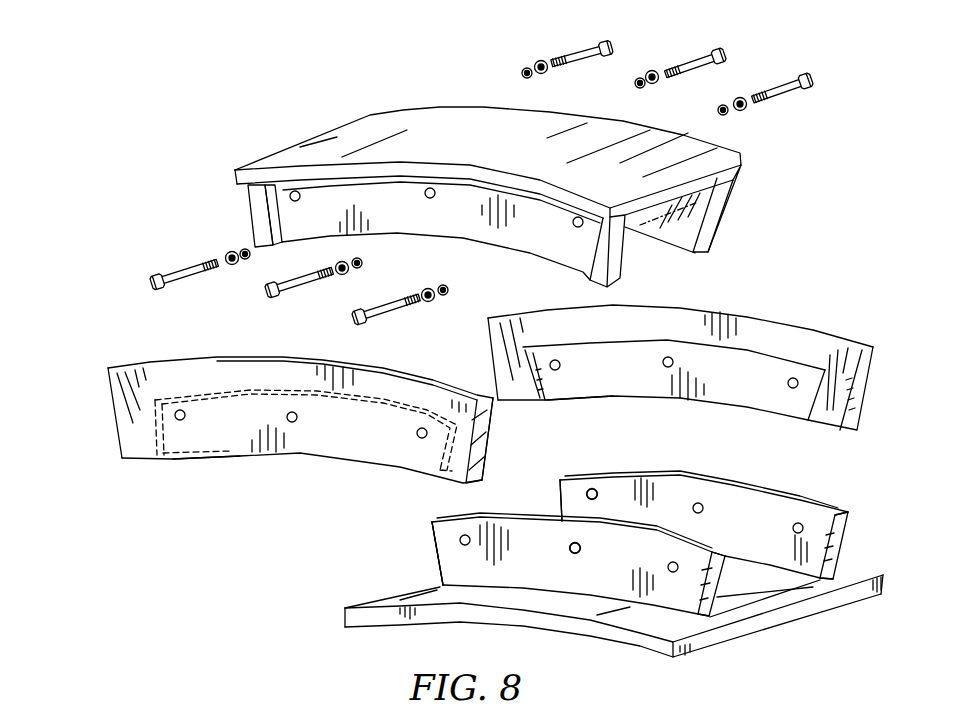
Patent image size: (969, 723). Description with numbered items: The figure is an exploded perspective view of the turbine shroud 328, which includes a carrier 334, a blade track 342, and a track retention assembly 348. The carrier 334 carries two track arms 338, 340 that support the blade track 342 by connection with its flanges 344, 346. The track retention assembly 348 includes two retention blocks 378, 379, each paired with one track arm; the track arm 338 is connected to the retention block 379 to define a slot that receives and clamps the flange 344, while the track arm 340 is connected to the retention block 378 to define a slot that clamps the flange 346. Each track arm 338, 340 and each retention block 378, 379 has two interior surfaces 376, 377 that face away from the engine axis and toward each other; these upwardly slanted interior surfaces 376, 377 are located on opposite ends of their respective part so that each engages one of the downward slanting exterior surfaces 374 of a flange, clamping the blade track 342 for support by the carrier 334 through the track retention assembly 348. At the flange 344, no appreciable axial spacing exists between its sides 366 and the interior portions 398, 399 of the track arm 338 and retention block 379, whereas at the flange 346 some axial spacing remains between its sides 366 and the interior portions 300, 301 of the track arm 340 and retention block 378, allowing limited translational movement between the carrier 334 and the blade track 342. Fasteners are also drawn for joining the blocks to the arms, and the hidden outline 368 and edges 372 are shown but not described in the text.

The turbine shroud 328 is at (222, 89).
The carrier 334 is at (597, 117).
The track arm 338 is at (726, 190).
The interior portion 398 is at (730, 226).
The track arm 340 is at (252, 199).
The interior portion 301 is at (412, 207).
The track retention assembly 348 is at (112, 248).
The retention block 378 is at (297, 373).
The retention block 379 is at (748, 328).
The interior surface 376 is at (175, 427).
The interior surface 377 is at (427, 455).
The interior portion 300 is at (319, 437).
The mounting plate 368 is at (477, 503).
The interior portion 399 is at (613, 387).
The blade track 342 is at (832, 470).
The flange 346 is at (530, 532).
The flange 344 is at (735, 508).
The side 366 is at (572, 562).
The first edge 372 is at (548, 496).
The exterior surface 374 is at (427, 548).